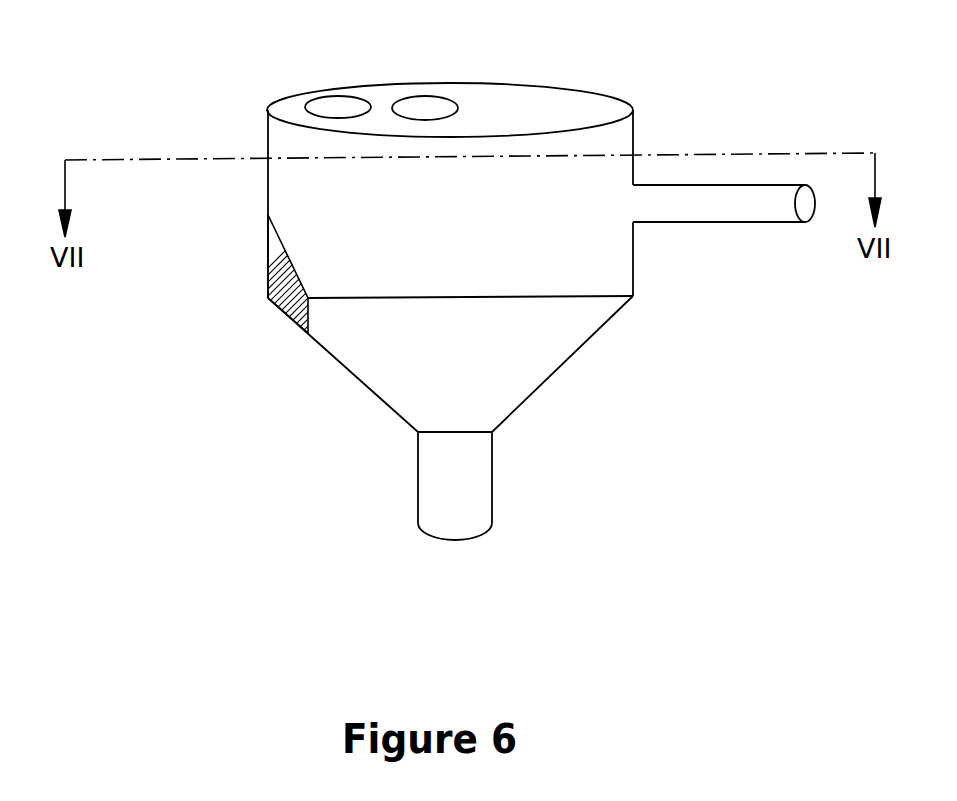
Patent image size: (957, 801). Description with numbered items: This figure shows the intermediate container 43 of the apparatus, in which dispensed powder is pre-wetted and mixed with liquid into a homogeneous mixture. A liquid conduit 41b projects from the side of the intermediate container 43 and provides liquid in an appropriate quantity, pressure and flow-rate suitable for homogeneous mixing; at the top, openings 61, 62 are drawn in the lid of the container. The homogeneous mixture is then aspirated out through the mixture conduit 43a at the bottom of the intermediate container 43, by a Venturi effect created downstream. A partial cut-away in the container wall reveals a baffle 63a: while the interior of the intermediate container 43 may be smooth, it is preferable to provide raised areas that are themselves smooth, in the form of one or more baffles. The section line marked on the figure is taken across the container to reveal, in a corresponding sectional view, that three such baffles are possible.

The intermediate container 43 is at (472, 255).
The mixture conduit 43a is at (418, 478).
The liquid conduit 41b is at (730, 223).
The first inlet hole 61 is at (305, 103).
The second inlet hole 62 is at (440, 97).
The baffle 63a is at (268, 283).